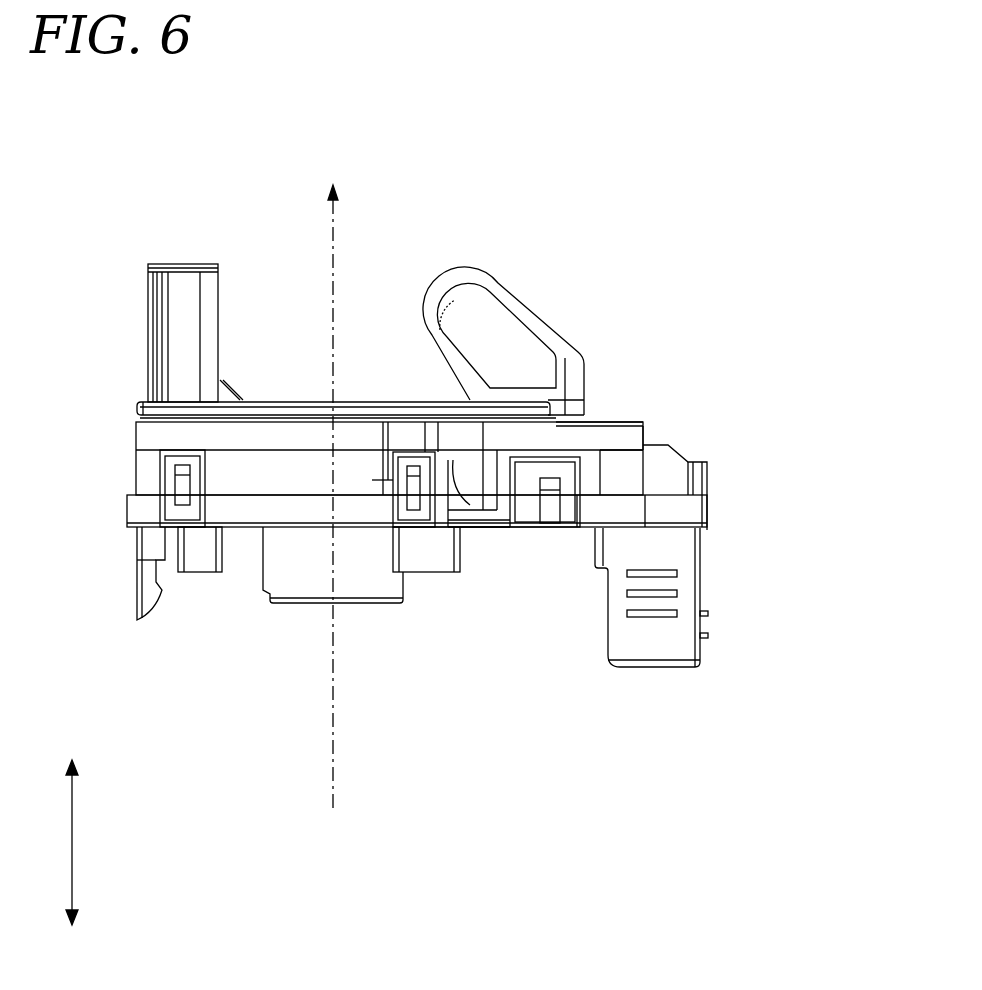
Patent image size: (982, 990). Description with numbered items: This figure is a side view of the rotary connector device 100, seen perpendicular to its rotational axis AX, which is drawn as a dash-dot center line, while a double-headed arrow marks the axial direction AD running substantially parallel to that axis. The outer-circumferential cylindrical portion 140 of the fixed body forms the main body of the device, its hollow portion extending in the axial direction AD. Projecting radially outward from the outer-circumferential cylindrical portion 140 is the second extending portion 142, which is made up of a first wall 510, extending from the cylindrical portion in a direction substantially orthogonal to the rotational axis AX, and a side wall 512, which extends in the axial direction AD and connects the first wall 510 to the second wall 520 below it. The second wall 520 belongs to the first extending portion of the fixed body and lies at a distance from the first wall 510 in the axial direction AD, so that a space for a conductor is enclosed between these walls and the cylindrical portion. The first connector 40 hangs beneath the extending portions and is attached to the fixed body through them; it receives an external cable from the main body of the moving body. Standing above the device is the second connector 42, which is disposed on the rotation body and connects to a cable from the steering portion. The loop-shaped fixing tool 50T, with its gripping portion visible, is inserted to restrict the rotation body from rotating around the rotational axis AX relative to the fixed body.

The rotary connector device 100 is at (787, 196).
The first connector 40 is at (706, 456).
The second connector 42 is at (187, 290).
The fixing tool 50T is at (521, 298).
The outer-circumferential cylindrical portion 140 is at (265, 468).
The second extending portion 142 is at (737, 303).
The first wall 510 is at (613, 418).
The side wall 512 is at (645, 428).
The second wall 520 is at (507, 527).
The rotational axis AX is at (335, 237).
The axial direction AD is at (72, 845).